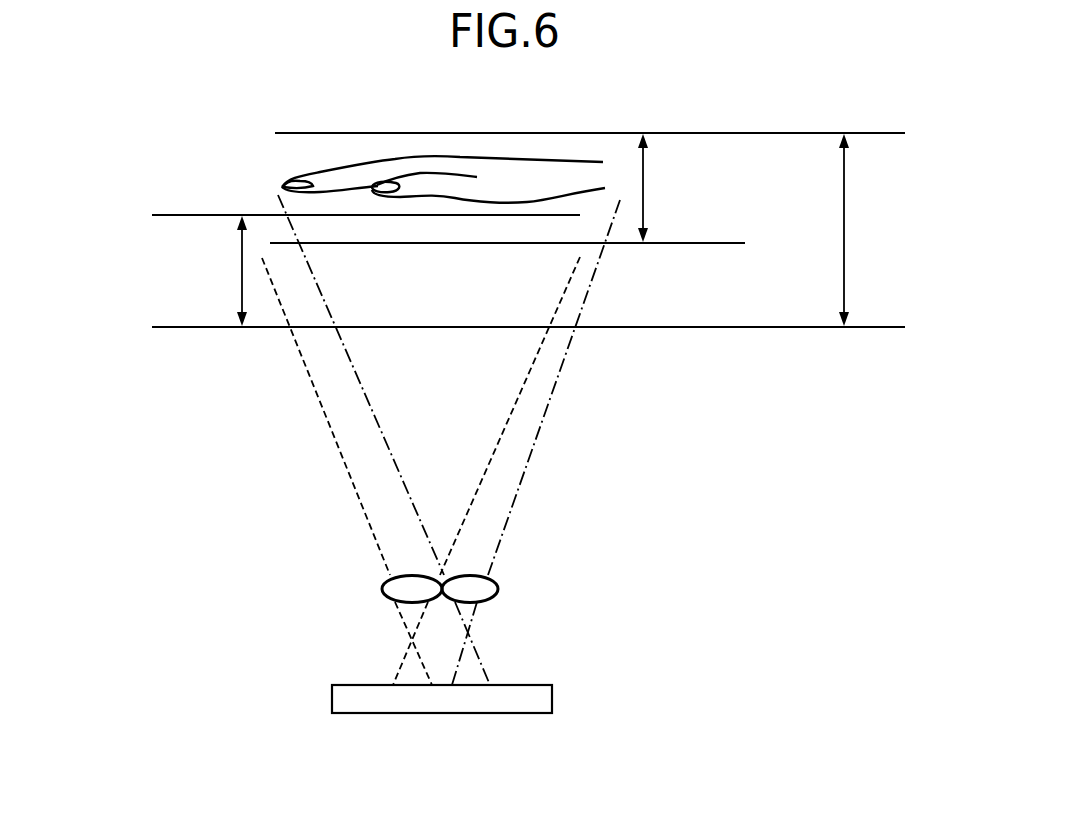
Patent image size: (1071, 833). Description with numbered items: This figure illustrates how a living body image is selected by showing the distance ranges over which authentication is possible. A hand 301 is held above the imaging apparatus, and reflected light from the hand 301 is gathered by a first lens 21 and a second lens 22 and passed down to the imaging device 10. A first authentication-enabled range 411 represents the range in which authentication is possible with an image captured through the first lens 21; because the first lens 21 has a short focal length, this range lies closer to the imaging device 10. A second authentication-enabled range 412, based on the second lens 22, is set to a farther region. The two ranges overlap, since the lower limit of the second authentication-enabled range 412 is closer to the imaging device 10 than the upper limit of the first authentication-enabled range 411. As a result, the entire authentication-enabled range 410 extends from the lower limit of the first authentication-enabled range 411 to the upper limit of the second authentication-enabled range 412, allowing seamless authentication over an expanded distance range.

The hand 301 is at (490, 157).
The first lens 21 is at (385, 589).
The second lens 22 is at (498, 589).
The imaging device 10 is at (552, 697).
The authentication-enabled range 410 is at (898, 230).
The first authentication-enabled range 411 is at (145, 271).
The second authentication-enabled range 412 is at (738, 188).